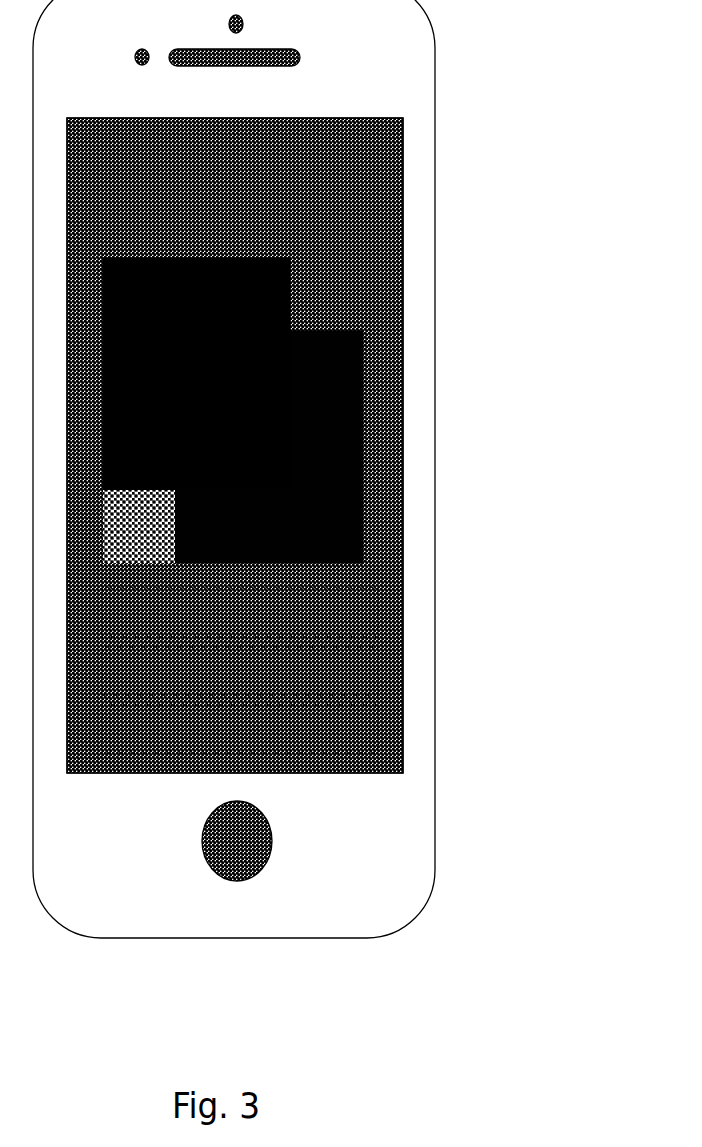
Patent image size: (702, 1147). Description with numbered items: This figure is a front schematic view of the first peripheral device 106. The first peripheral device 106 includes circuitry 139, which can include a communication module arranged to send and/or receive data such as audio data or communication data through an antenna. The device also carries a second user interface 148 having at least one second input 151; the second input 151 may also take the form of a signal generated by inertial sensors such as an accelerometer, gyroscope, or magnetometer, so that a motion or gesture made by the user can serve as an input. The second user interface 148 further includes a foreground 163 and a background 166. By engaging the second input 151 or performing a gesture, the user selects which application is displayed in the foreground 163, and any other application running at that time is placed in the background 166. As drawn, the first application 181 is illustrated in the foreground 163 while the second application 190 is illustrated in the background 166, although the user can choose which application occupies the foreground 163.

The first peripheral device 106 is at (435, 128).
The circuitry 139 is at (440, 382).
The second user interface 148 is at (253, 185).
The second application 190 is at (213, 303).
The background 166 is at (291, 293).
The first application 181 is at (288, 386).
The foreground 163 is at (175, 529).
The second input 151 is at (240, 670).